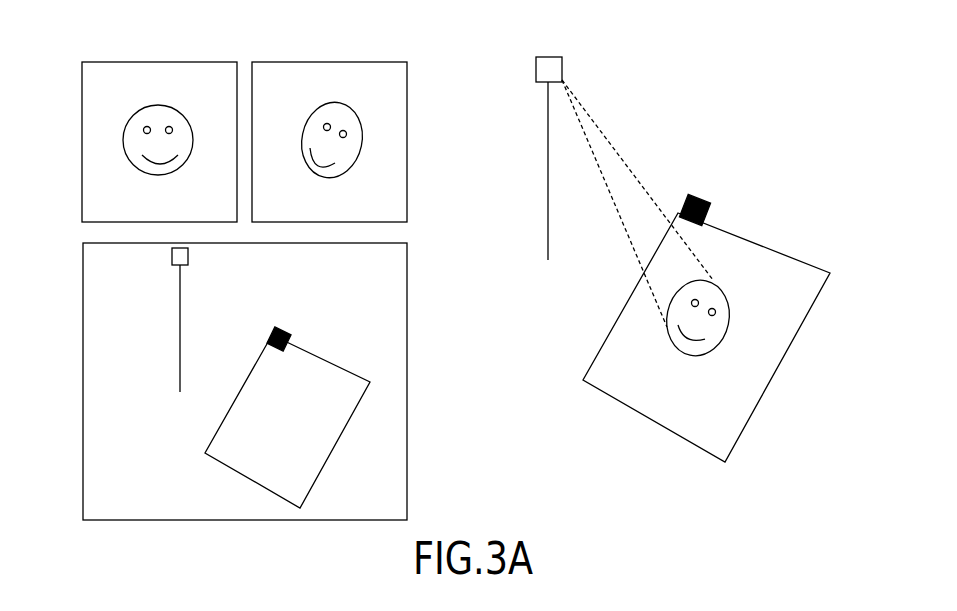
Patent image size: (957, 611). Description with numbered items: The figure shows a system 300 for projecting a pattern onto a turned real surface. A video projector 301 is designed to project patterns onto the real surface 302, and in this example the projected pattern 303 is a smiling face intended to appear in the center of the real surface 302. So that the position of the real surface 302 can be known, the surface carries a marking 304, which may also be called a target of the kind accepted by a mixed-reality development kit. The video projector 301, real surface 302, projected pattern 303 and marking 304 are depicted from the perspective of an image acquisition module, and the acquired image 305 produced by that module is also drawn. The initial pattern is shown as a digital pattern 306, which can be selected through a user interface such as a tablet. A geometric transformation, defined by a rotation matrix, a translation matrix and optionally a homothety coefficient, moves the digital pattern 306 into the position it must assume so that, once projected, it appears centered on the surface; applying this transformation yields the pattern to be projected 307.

The system for projecting a pattern 300 is at (685, 92).
The video projector 301 is at (547, 57).
The real surface 302 is at (760, 232).
The projected pattern 303 is at (733, 308).
The marking 304 is at (702, 195).
The acquired image 305 is at (407, 378).
The digital pattern 306 is at (160, 62).
The pattern to be projected 307 is at (329, 62).